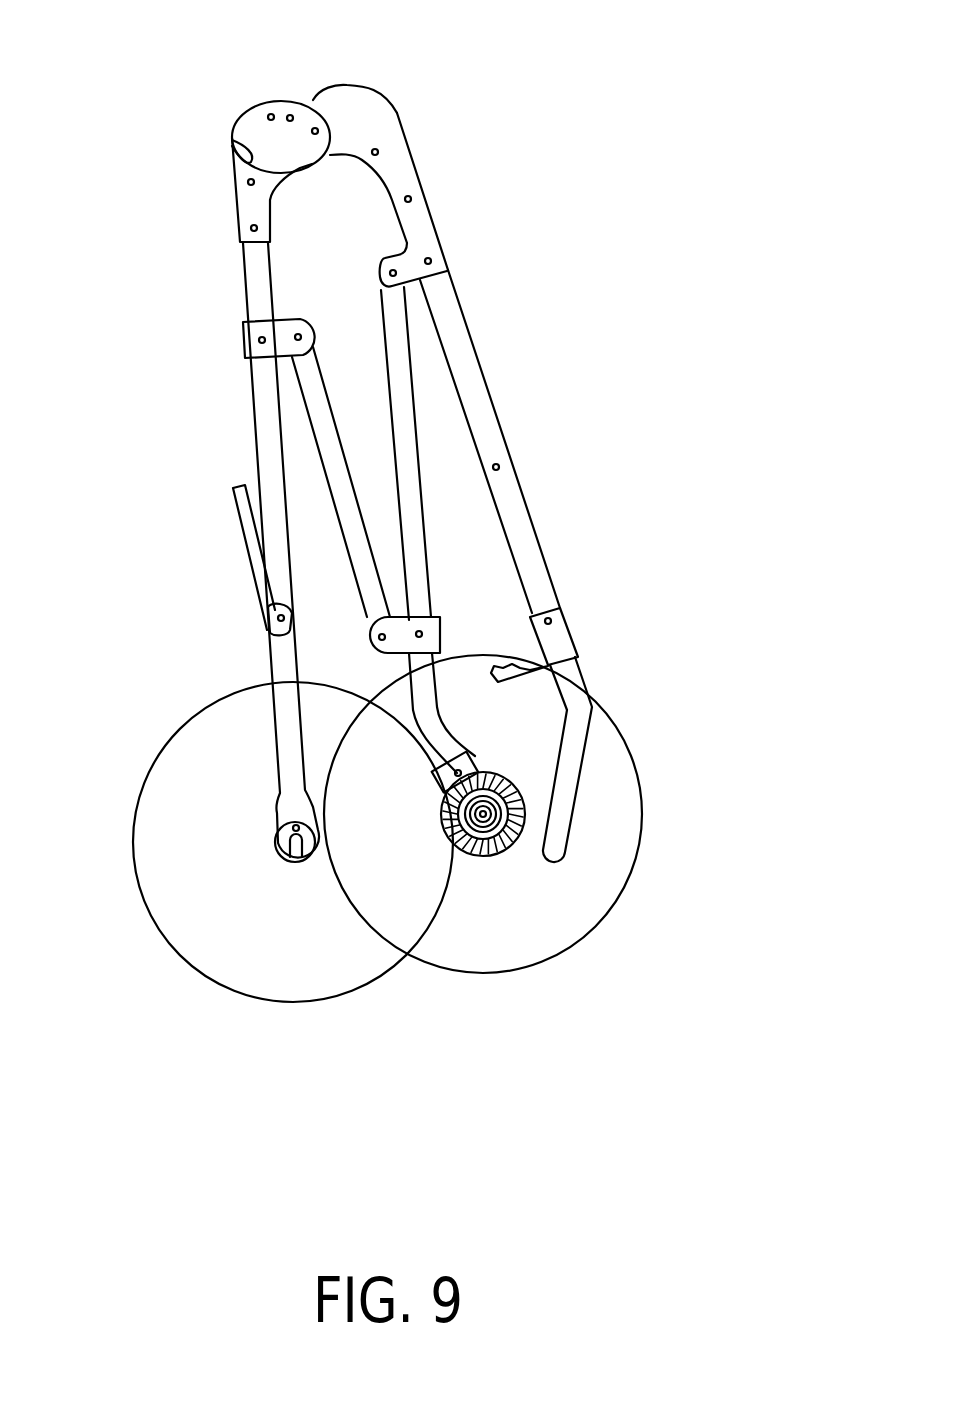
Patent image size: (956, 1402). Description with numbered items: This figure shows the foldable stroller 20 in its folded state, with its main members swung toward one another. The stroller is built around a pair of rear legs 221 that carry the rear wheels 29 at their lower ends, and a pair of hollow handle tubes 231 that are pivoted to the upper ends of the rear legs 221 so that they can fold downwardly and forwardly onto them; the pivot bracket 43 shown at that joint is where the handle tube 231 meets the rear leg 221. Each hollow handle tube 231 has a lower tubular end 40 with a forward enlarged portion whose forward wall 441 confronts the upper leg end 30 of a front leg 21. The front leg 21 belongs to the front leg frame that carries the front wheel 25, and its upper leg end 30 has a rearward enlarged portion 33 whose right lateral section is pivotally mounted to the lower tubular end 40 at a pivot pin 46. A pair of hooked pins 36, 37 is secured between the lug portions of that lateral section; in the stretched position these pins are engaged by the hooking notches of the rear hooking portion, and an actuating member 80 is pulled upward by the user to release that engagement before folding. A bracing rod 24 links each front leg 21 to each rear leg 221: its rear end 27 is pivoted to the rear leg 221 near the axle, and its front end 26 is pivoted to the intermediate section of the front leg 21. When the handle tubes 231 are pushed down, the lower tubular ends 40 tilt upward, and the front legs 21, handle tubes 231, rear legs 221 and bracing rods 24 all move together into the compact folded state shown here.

The foldable stroller 20 is at (527, 531).
The front leg 21 is at (260, 460).
The bracing rod 24 is at (300, 393).
The front wheel 25 is at (325, 1002).
The front end 26 is at (248, 340).
The rear end 27 is at (377, 638).
The rear wheel 29 is at (557, 958).
The upper leg end 30 is at (193, 148).
The rearward enlarged portion 33 is at (248, 156).
The hooked pin 36 is at (266, 86).
The hooked pin 37 is at (268, 114).
The lower tubular end 40 is at (418, 157).
The stem bracket 43 is at (379, 212).
The pivot pin 46 is at (316, 128).
The actuating member 80 is at (572, 628).
The rear leg 221 is at (425, 565).
The hollow handle tube 231 is at (515, 478).
The forward wall 441 is at (357, 83).